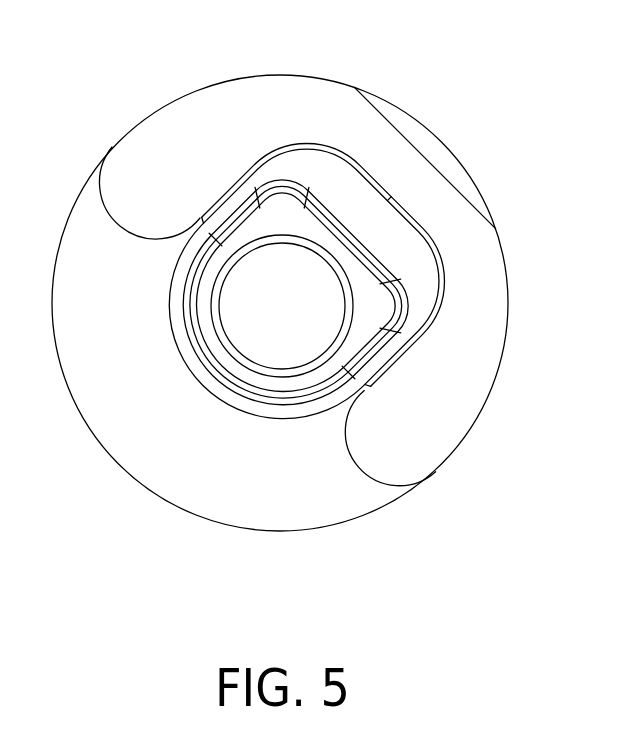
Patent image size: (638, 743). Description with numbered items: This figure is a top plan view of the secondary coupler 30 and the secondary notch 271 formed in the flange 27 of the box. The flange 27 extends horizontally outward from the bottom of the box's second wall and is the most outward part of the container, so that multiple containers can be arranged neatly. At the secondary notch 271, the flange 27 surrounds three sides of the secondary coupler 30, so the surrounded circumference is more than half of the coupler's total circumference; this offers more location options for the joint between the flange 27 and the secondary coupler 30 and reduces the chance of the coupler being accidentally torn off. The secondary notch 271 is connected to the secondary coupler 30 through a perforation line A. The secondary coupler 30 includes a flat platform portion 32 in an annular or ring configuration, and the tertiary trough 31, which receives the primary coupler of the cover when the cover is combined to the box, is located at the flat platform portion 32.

The flange 27 is at (417, 417).
The secondary notch 271 is at (447, 291).
The secondary coupler 30 is at (187, 364).
The tertiary trough 31 is at (267, 333).
The flat platform portion 32 is at (293, 383).
The perforation line A is at (282, 142).